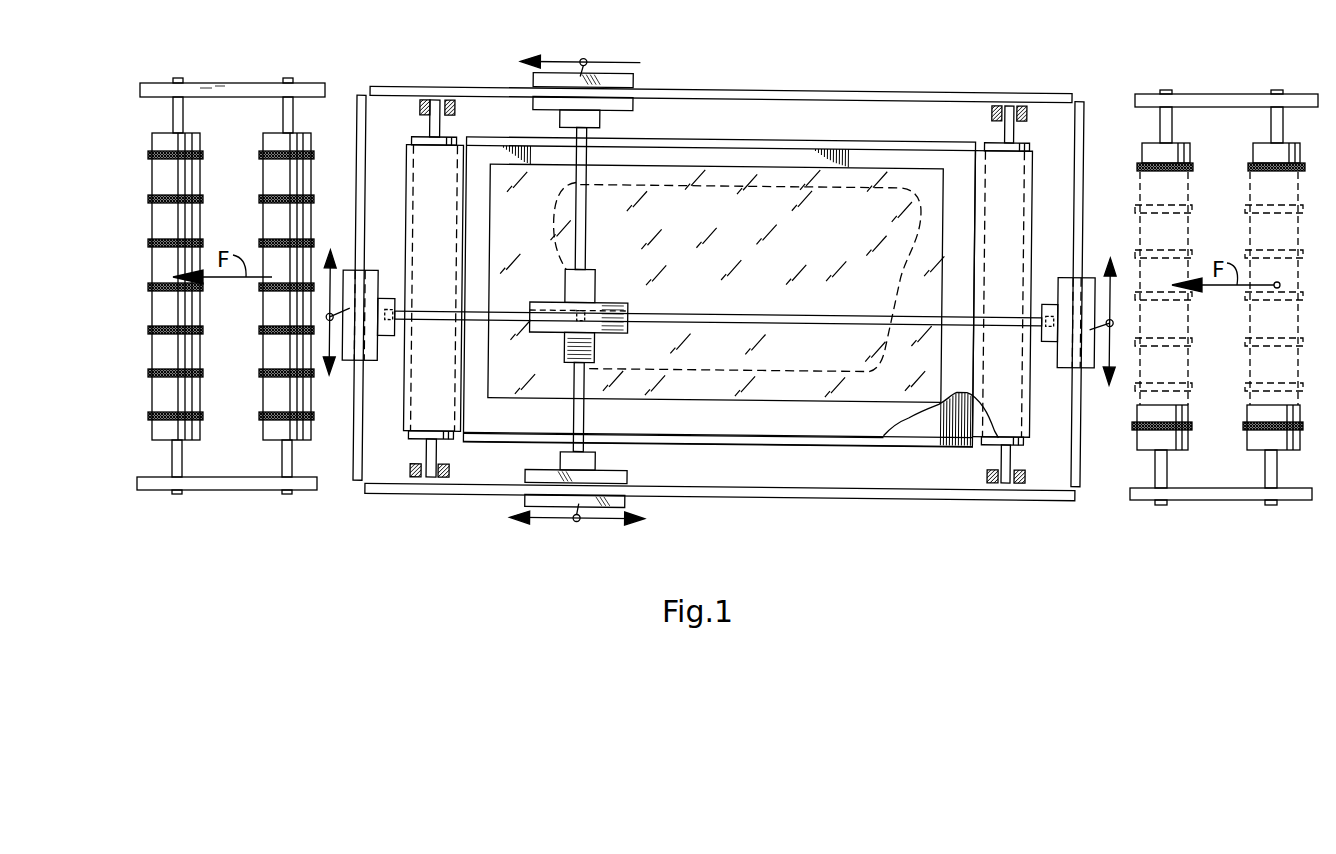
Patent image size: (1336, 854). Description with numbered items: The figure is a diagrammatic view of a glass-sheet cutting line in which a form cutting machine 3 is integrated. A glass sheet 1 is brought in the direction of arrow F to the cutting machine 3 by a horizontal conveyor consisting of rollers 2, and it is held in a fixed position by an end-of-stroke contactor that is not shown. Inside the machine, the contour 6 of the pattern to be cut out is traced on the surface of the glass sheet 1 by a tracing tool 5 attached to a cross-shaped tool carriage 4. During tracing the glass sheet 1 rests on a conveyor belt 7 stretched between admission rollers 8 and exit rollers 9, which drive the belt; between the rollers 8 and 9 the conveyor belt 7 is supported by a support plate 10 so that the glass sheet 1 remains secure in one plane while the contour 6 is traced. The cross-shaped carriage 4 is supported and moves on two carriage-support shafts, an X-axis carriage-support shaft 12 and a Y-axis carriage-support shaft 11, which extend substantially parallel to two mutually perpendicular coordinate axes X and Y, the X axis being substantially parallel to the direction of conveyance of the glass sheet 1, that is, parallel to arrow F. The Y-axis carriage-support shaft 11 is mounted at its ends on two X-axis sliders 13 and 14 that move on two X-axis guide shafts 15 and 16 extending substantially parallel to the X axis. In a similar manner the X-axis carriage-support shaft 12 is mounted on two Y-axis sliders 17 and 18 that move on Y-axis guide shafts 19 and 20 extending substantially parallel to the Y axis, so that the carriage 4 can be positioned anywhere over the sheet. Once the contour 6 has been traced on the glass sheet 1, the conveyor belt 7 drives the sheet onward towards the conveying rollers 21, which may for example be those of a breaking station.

The glass sheet 1 is at (900, 177).
The rollers 2 is at (1277, 152).
The cutting machine 3 is at (760, 72).
The cross-shaped tool carriage 4 is at (602, 294).
The tracing tool 5 is at (575, 320).
The contour 6 is at (688, 187).
The conveyor belt 7 is at (777, 425).
The admission rollers 8 is at (990, 438).
The exit rollers 9 is at (420, 438).
The support plate 10 is at (903, 432).
The Y-axis carriage-support shaft 11 is at (603, 417).
The X-axis carriage-support shaft 12 is at (728, 314).
The X-axis slider 13 is at (625, 500).
The X-axis slider 14 is at (640, 77).
The X-axis guide shaft 15 is at (782, 490).
The X-axis guide shaft 16 is at (867, 99).
The Y-axis slider 17 is at (1067, 283).
The Y-axis slider 18 is at (368, 352).
The Y-axis guide shaft 19 is at (1077, 473).
The Y-axis guide shaft 20 is at (357, 466).
The conveying rollers 21 is at (275, 140).